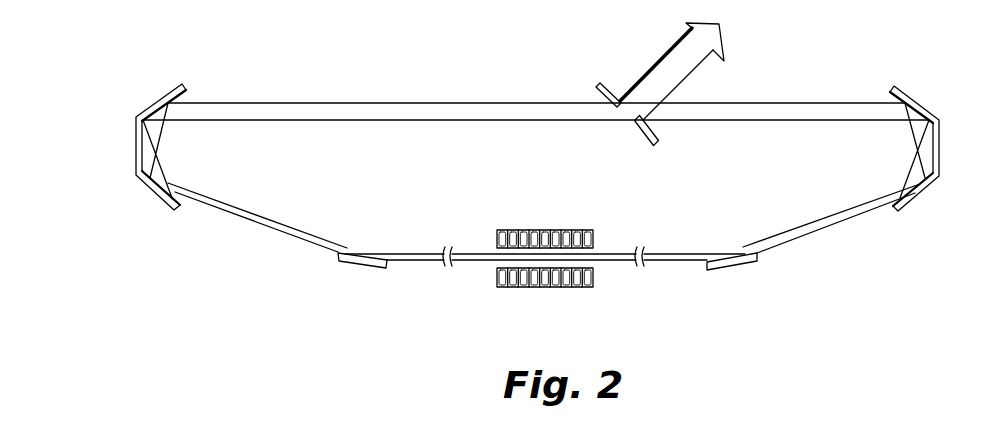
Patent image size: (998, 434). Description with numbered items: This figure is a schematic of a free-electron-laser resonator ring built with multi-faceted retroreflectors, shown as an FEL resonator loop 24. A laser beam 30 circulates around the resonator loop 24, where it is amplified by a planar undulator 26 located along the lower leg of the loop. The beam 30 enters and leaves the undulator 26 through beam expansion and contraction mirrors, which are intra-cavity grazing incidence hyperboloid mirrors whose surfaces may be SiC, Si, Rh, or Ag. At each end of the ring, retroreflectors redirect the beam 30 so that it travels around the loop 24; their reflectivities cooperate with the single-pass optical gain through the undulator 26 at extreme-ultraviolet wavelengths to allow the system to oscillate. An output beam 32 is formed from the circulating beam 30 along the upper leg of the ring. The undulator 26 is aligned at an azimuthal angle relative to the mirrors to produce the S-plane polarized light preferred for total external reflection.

The FEL resonator loop 24 is at (416, 189).
The undulator 26 is at (557, 230).
The laser beam 30 is at (321, 103).
The output beam 32 is at (677, 51).